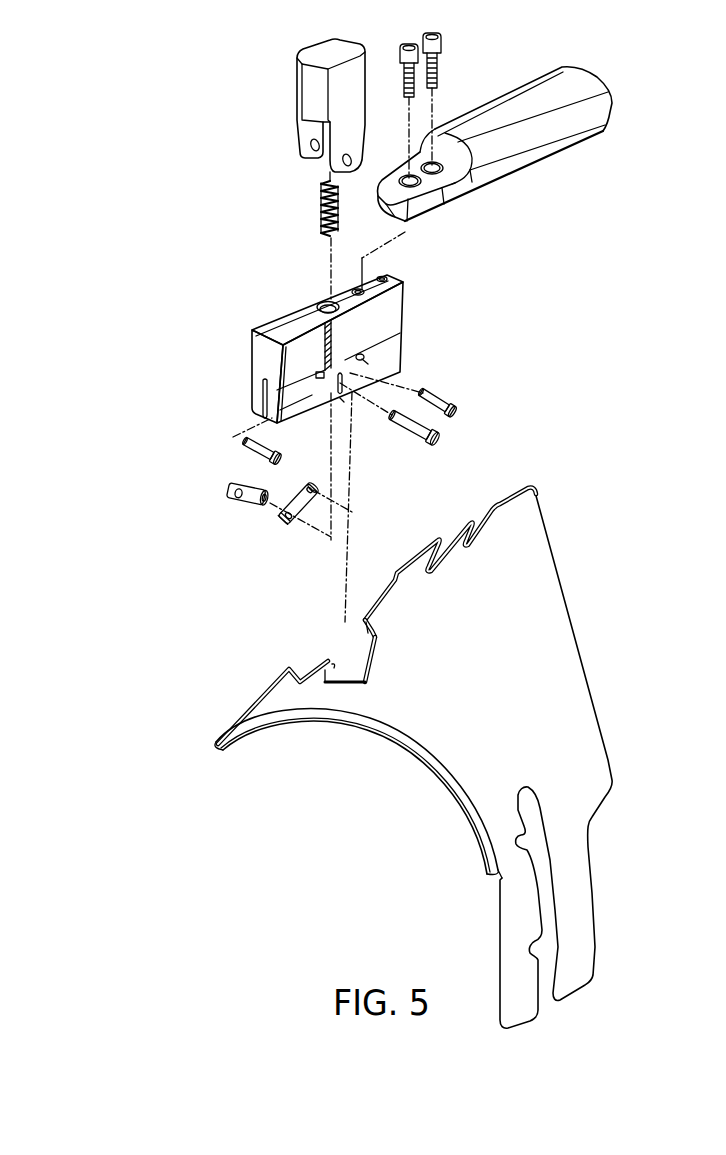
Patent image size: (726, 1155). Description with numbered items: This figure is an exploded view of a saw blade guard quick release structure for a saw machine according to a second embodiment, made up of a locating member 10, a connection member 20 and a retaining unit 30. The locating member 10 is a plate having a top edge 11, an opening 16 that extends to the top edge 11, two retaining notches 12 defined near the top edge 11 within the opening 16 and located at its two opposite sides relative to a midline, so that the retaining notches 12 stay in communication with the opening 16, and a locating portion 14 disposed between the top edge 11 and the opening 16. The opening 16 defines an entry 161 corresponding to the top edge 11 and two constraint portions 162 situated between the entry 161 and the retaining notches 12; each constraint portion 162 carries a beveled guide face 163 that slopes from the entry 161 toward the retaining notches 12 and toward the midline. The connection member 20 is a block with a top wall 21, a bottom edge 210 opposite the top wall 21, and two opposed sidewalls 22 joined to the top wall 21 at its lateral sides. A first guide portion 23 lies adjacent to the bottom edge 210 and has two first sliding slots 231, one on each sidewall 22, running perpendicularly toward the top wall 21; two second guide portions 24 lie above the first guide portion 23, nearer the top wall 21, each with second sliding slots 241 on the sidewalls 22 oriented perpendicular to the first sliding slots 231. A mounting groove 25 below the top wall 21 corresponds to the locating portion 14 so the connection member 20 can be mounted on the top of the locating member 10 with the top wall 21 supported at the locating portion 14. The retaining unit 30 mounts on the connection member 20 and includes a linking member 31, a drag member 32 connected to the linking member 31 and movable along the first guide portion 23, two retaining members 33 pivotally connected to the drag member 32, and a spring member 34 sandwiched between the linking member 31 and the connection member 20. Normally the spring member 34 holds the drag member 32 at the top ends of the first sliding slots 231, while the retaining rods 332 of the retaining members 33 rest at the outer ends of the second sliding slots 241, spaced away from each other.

The locating member 10 is at (418, 750).
The top edge 11 is at (421, 550).
The retaining notches 12 is at (377, 640).
The locating portion 14 is at (318, 665).
The opening 16 is at (367, 684).
The entry 161 is at (347, 652).
The constraint portions 162 is at (377, 637).
The beveled guide face 163 is at (367, 625).
The connection member 20 is at (410, 289).
The top wall 21 is at (338, 369).
The sidewalls 22 is at (393, 347).
The first guide portion 23 is at (342, 408).
The second guide portions 24 is at (320, 374).
The second sliding slots 241 is at (362, 358).
The first sliding slots 231 is at (345, 380).
The mounting groove 25 is at (263, 393).
The bottom edge 210 is at (311, 420).
The retaining unit 30 is at (288, 94).
The linking member 31 is at (328, 52).
The drag member 32 is at (438, 427).
The retaining members 33 is at (215, 491).
The spring member 34 is at (320, 196).
The retaining rods 332 is at (531, 384).